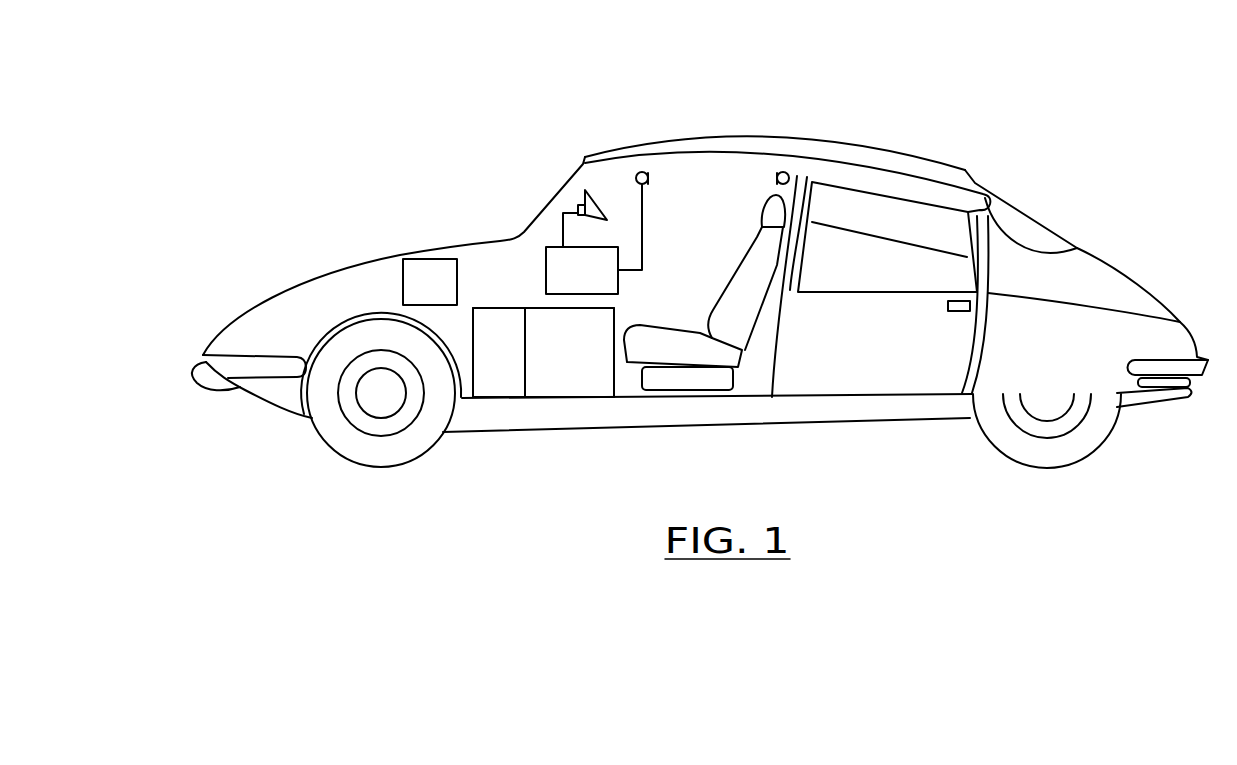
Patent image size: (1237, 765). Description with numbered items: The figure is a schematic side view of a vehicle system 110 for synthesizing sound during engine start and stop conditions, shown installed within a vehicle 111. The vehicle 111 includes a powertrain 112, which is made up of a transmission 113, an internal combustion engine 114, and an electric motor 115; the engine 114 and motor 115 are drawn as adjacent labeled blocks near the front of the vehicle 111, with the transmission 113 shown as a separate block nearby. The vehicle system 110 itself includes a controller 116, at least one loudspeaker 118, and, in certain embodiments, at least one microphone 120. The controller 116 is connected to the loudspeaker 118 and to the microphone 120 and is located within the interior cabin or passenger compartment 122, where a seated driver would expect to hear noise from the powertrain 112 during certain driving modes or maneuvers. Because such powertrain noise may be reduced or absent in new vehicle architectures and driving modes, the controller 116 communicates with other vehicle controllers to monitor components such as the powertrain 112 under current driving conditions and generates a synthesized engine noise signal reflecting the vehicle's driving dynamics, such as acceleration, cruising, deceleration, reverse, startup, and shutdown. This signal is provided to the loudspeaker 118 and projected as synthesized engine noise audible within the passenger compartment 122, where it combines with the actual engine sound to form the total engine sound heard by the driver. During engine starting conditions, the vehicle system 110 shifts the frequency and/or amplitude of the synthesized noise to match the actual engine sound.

The vehicle system 110 is at (492, 102).
The vehicle 111 is at (1026, 214).
The powertrain 112 is at (466, 344).
The transmission 113 is at (412, 297).
The internal combustion engine 114 is at (479, 382).
The electric motor 115 is at (549, 382).
The controller 116 is at (564, 284).
The loudspeaker 118 is at (578, 205).
The microphone 120 is at (638, 168).
The passenger compartment 122 is at (699, 186).